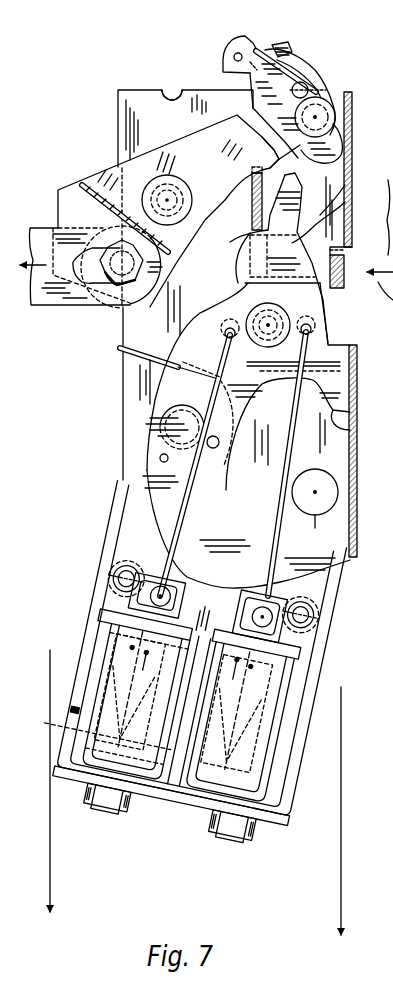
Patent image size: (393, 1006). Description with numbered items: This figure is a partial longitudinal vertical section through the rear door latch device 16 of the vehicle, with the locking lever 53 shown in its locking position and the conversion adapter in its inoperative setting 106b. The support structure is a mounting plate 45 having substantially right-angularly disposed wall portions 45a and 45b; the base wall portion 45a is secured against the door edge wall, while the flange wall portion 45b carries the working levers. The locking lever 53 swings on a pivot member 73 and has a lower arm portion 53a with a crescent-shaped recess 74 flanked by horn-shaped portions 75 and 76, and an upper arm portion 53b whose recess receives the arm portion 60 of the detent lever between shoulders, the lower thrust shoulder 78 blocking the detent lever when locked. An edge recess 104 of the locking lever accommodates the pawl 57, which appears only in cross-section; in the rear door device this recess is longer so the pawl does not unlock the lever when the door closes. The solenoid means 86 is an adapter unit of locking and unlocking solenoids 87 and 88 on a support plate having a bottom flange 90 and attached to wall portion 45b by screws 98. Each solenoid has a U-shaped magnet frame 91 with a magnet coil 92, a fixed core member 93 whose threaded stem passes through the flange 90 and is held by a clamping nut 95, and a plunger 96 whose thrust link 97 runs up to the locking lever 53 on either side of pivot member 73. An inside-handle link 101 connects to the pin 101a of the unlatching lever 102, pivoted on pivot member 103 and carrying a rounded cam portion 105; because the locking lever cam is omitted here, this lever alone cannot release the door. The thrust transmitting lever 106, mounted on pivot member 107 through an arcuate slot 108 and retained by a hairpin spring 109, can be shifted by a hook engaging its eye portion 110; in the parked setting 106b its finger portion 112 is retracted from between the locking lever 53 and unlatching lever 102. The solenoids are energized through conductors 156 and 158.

The latch device 16 is at (120, 344).
The mounting plate 45 is at (118, 122).
The wall portion 45a is at (345, 185).
The wall portion 45b is at (164, 94).
The locking lever 53 is at (177, 380).
The lower arm portion 53a is at (127, 476).
The upper arm portion 53b is at (345, 202).
The pawl 57 is at (345, 280).
The arm portion 60 is at (253, 197).
The pivot member 73 is at (284, 308).
The crescent-shaped recess 74 is at (248, 488).
The horn-shaped portion 75 is at (358, 428).
The horn-shaped portion 76 is at (355, 506).
The shoulder 78 is at (227, 262).
The solenoid means 86 is at (105, 621).
The locking solenoid 87 is at (77, 732).
The unlocking solenoid 88 is at (278, 750).
The bottom flange 90 is at (173, 798).
The magnet frame 91 is at (98, 681).
The magnet coil 92 is at (90, 703).
The fixed core member 93 is at (67, 749).
The clamping nut 95 is at (142, 812).
The plunger 96 is at (135, 647).
The thrust link 97 is at (270, 530).
The screw 98 is at (117, 566).
The link 101 is at (43, 228).
The pin 101a is at (250, 235).
The unlatching lever 102 is at (190, 137).
The pivot member 103 is at (178, 189).
The edge recess 104 is at (340, 308).
The rounded cam portion 105 is at (257, 151).
The thrust transmitting lever 106 is at (312, 67).
The inoperative setting 106b is at (298, 60).
The pivot member 107 is at (340, 117).
The arcuate slot 108 is at (252, 110).
The hairpin spring 109 is at (270, 47).
The eye portion 110 is at (235, 38).
The finger portion 112 is at (340, 150).
The conductor 156 is at (52, 866).
The conductor 158 is at (342, 888).